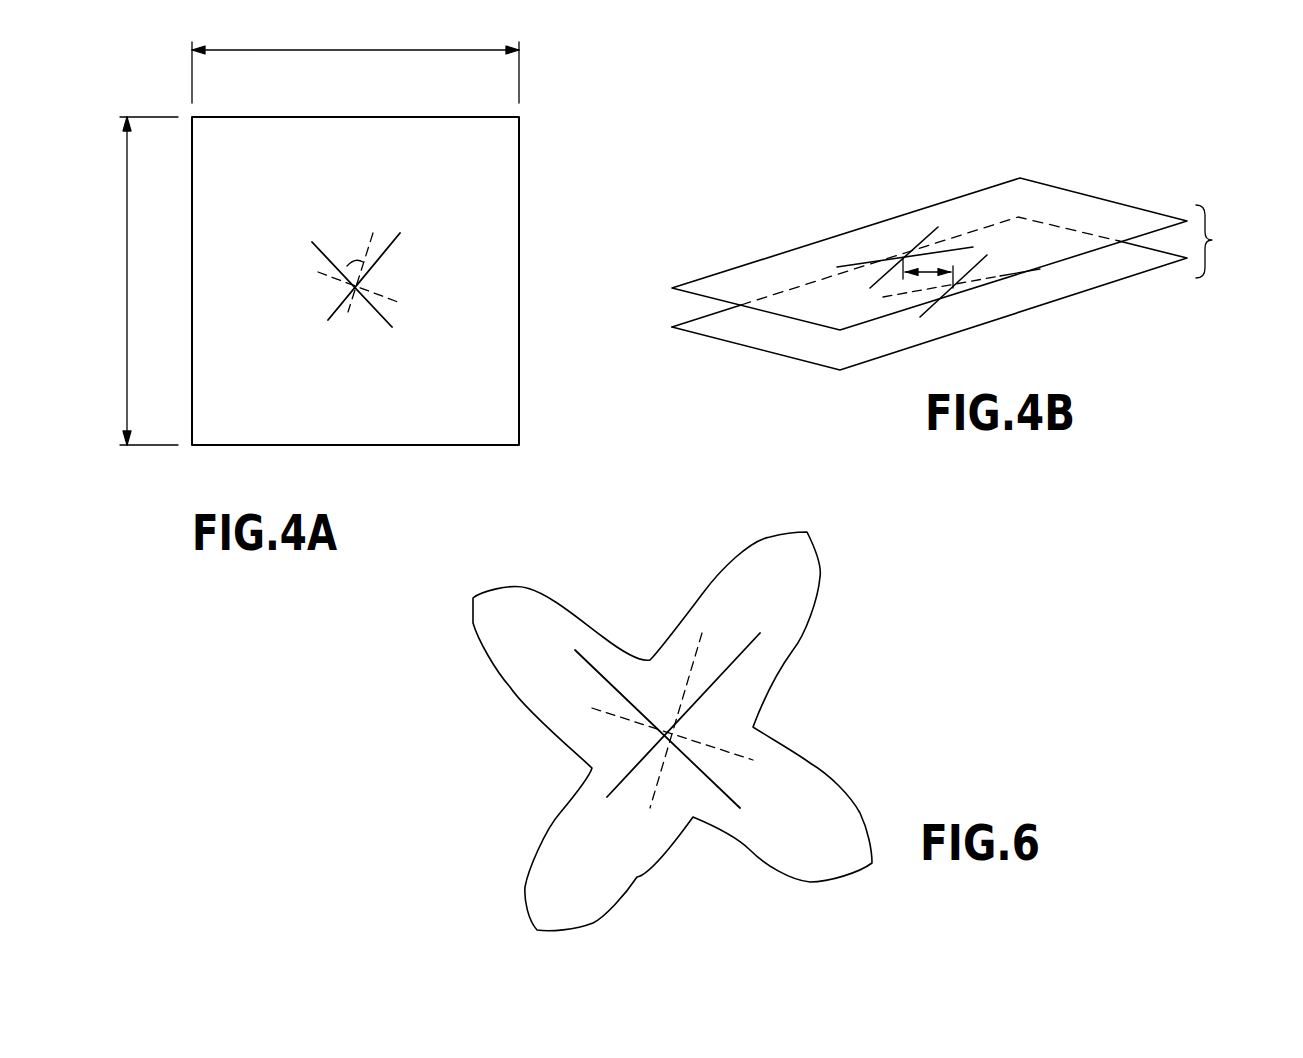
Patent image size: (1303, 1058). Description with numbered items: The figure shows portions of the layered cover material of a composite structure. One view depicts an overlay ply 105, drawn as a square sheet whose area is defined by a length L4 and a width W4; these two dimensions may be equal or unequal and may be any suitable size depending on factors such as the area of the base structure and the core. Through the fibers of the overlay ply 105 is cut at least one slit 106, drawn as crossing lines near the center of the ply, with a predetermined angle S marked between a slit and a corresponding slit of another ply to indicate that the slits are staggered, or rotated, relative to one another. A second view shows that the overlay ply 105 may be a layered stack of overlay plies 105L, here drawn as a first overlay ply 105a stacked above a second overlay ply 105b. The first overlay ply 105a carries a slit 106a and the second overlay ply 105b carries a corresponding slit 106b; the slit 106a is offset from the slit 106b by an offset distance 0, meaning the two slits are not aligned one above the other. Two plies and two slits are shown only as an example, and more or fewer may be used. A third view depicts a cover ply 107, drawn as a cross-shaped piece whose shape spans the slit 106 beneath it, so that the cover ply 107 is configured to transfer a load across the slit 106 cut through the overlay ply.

In FIG. 4A, the overlay ply 105 is at (519, 163).
In FIG. 4B, the first overlay ply 105a is at (1065, 187).
In FIG. 4B, the second overlay ply 105b is at (1107, 287).
In FIG. 4B, the layered stack of overlay plies 105L is at (1236, 241).
In FIG. 4A, the slit 106 is at (397, 240).
In FIG. 6, the slit 106 is at (748, 652).
In FIG. 4B, the slit of the first overlay ply 106a is at (927, 237).
In FIG. 4B, the slit of the second overlay ply 106b is at (975, 265).
In FIG. 6, the cover ply 107 is at (777, 533).
In FIG. 4B, the offset distance 0 is at (931, 271).
In FIG. 4A, the length of the overlay ply L4 is at (343, 49).
In FIG. 4A, the width of the overlay ply W4 is at (119, 281).
In FIG. 4A, the predetermined angle S is at (347, 266).